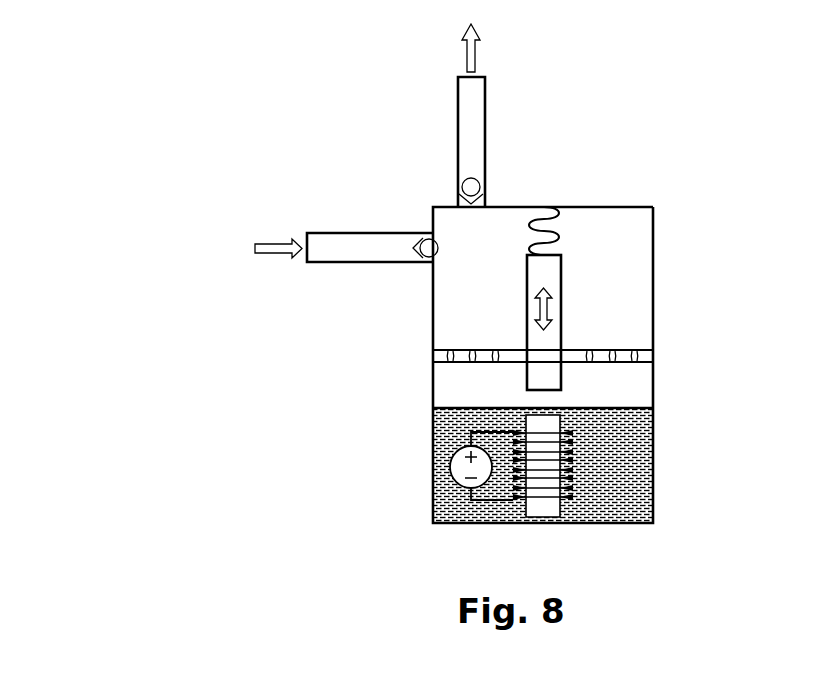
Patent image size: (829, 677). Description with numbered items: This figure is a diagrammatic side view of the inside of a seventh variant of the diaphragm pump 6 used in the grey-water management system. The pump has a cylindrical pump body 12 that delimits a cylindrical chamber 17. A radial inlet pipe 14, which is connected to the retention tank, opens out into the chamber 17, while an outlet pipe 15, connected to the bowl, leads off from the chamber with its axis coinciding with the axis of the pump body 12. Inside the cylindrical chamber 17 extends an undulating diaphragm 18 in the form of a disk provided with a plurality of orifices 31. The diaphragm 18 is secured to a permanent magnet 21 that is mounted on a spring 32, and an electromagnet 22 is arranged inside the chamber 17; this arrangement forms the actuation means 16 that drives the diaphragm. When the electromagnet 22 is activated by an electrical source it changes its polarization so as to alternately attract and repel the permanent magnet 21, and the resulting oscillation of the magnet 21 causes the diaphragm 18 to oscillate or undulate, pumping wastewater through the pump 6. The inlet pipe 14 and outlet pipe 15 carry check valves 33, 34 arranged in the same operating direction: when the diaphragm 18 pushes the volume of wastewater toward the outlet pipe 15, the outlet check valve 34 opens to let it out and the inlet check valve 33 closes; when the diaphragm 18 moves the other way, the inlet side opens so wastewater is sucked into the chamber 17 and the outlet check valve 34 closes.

The diaphragm pump 6 is at (657, 165).
The cylindrical pump body 12 is at (432, 392).
The inlet pipe 14 is at (340, 263).
The outlet pipe 15 is at (486, 109).
The actuation means 16 is at (623, 285).
The cylindrical chamber 17 is at (637, 240).
The undulating diaphragm 18 is at (647, 365).
The permanent magnet 21 is at (563, 272).
The electromagnet 22 is at (590, 480).
The orifices 31 is at (475, 348).
The spring 32 is at (557, 214).
The inlet check valve 33 is at (423, 240).
The outlet check valve 34 is at (462, 183).